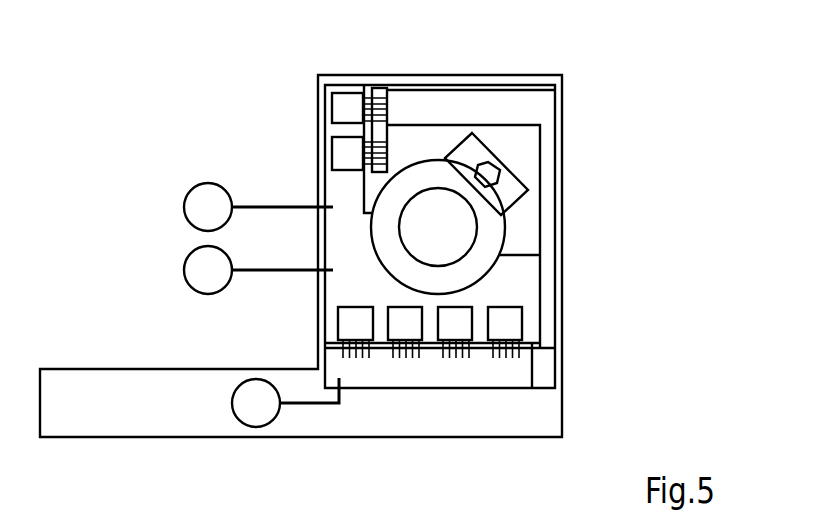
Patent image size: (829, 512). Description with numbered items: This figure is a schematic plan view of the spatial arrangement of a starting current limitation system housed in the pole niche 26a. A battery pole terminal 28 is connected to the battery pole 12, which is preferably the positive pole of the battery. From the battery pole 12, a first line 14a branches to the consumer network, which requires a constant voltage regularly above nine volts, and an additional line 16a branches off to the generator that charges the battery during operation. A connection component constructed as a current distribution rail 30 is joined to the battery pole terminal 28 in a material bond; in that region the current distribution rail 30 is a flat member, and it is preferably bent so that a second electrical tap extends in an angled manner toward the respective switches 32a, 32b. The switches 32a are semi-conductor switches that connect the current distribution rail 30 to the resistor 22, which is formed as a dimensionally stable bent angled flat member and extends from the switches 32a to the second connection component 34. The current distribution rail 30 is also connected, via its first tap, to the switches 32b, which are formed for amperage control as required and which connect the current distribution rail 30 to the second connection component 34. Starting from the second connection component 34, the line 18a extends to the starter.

The second battery pole 12 is at (452, 238).
The first line 14a is at (283, 205).
The additional line 16a is at (268, 273).
The line 18a is at (317, 407).
The resistor 22 is at (443, 98).
The pole niche 26a is at (518, 147).
The battery pole terminal 28 is at (490, 233).
The current distribution rail 30 is at (523, 280).
The switches 32a is at (348, 103).
The switches 32b is at (517, 325).
The second connection component 34 is at (450, 377).